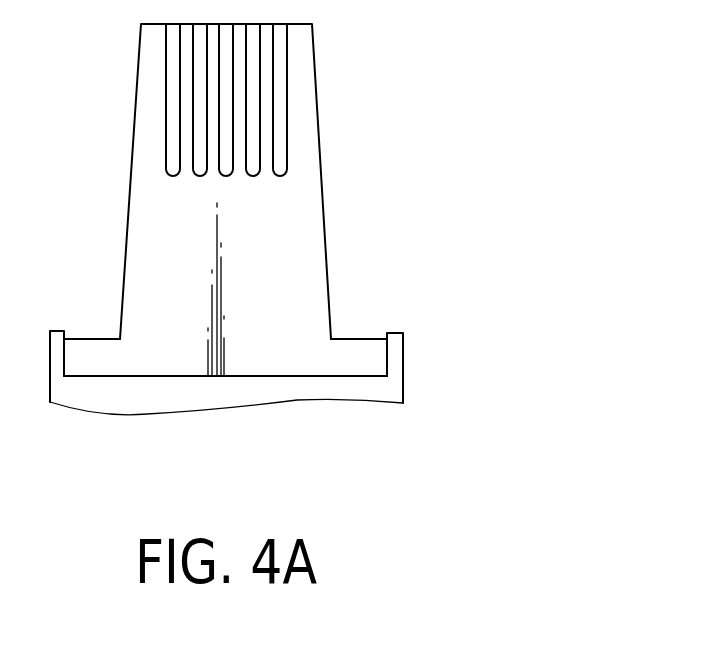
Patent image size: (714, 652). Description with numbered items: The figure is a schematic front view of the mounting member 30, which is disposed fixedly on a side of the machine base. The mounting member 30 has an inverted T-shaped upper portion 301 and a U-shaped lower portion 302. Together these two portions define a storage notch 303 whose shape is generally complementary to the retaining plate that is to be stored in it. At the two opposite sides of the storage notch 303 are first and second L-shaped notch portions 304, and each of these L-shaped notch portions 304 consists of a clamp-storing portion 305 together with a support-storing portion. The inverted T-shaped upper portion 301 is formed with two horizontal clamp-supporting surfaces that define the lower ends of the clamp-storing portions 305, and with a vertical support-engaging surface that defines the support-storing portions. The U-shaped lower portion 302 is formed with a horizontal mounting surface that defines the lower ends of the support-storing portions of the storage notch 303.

The mounting member 30 is at (316, 257).
The inverted T-shaped upper portion 301 is at (317, 96).
The U-shaped lower portion 302 is at (403, 352).
The storage notch 303 is at (258, 360).
The L-shaped notch portions 304 is at (353, 365).
The clamp-storing portion 305 is at (349, 339).